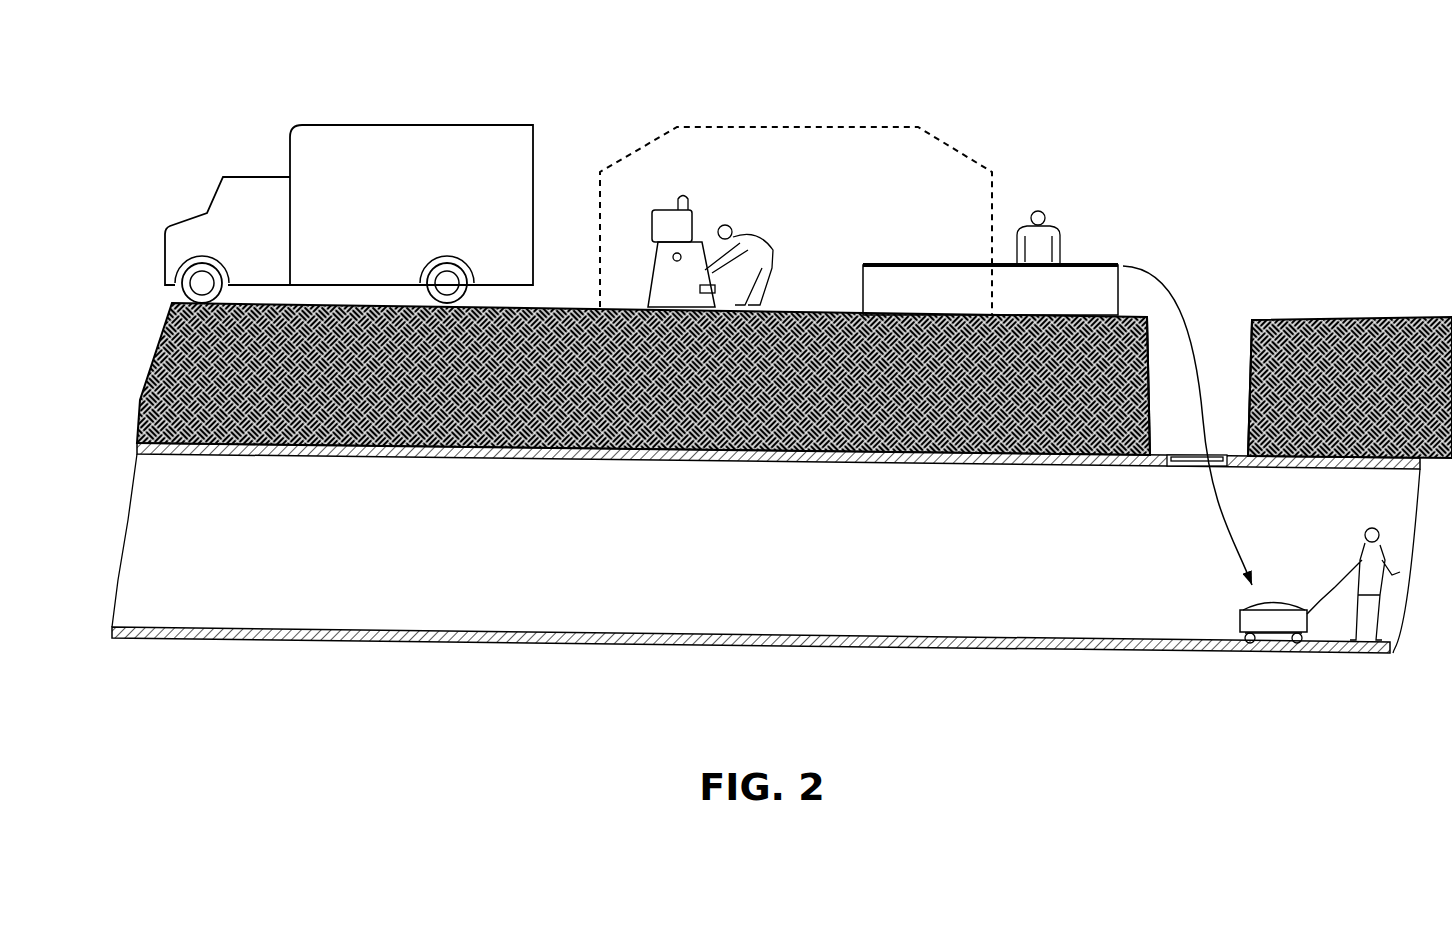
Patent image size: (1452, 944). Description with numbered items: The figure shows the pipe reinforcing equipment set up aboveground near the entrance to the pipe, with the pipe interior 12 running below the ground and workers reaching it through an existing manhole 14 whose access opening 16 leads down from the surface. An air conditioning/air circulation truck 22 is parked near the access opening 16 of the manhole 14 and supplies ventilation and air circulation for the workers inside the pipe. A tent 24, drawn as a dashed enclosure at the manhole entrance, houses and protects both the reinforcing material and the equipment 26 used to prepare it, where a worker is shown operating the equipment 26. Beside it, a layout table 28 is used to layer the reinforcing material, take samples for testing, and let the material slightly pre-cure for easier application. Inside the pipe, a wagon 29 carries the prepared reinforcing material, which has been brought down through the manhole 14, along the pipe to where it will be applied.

The tunnel 12 is at (1030, 632).
The manhole 14 is at (1217, 470).
The access opening 16 is at (1150, 312).
The air conditioning/air circulation truck 22 is at (402, 122).
The tent 24 is at (808, 127).
The equipment 26 is at (670, 207).
The layout table 28 is at (983, 258).
The wagon 29 is at (1275, 637).